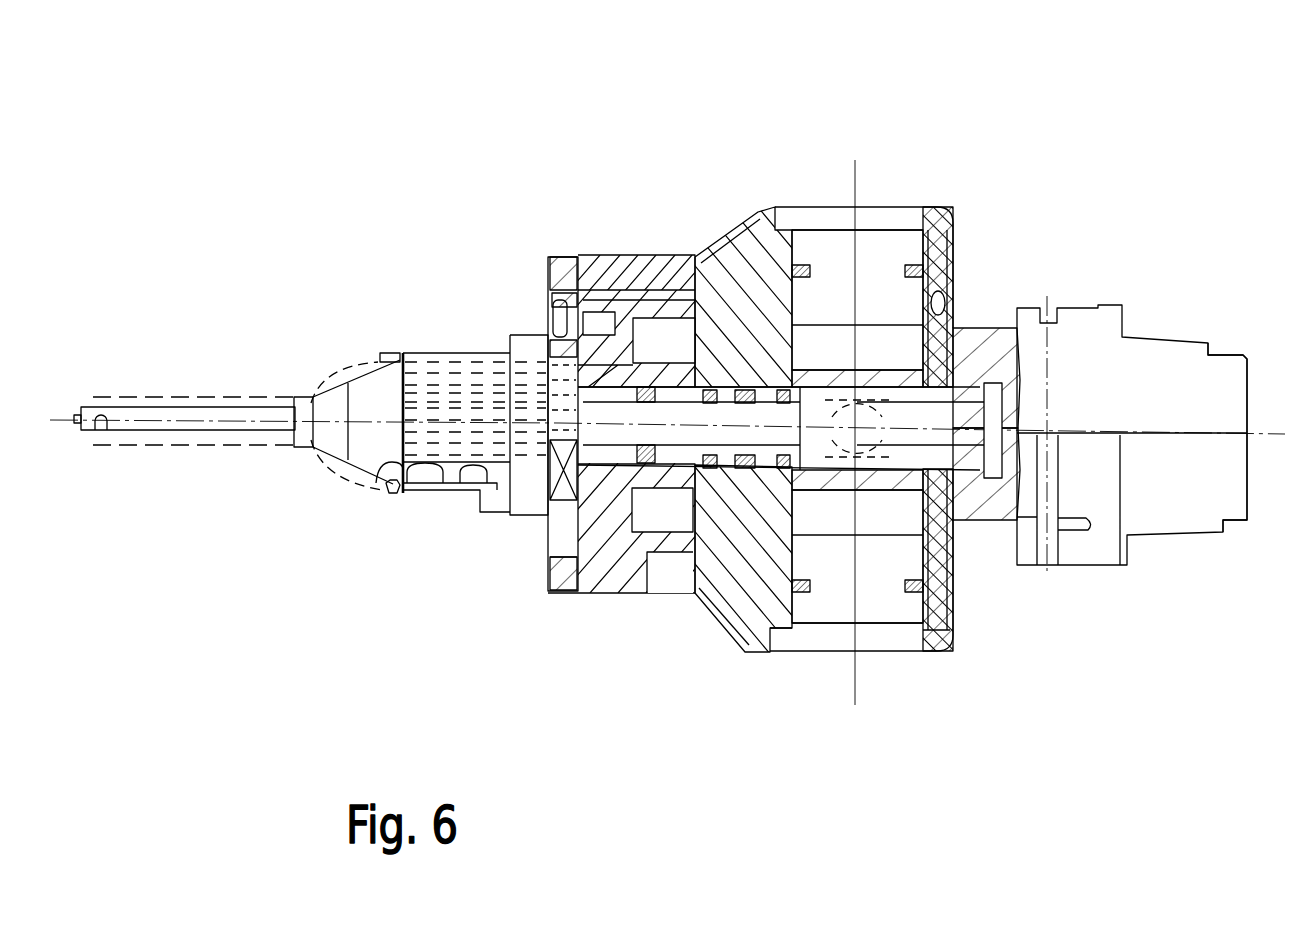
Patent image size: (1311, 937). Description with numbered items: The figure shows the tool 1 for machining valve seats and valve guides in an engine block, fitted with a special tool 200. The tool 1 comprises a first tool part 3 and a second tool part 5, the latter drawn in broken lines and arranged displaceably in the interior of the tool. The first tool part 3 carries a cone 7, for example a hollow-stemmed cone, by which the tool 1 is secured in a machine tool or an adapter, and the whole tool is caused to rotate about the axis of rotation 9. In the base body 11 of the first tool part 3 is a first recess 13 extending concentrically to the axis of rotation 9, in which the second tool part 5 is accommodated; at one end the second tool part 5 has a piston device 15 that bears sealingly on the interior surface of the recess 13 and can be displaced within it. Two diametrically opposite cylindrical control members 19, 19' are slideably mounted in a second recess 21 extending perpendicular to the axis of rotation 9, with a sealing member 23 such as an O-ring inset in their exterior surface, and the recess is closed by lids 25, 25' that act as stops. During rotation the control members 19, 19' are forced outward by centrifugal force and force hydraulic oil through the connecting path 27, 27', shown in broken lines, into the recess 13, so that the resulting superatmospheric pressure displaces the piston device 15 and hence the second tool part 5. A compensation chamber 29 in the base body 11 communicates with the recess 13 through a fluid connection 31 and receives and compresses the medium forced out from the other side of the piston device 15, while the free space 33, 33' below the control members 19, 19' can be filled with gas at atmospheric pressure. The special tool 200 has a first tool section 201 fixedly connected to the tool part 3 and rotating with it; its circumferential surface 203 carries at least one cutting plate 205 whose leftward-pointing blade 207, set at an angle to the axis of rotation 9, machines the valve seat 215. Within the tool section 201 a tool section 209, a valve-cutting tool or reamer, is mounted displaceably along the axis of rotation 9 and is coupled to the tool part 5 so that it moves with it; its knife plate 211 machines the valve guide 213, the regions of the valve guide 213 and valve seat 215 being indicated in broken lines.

The tool 1 is at (777, 187).
The first tool part 3 is at (742, 270).
The second tool part 5 is at (481, 423).
The cone 7 is at (1213, 395).
The axis of rotation 9 is at (1158, 415).
The base body 11 is at (728, 603).
The first recess 13 is at (958, 413).
The piston device 15 is at (548, 592).
The control member 19 is at (869, 216).
The control member 19' is at (892, 606).
The second recess 21 is at (743, 222).
The sealing member 23 is at (813, 267).
The lid 25 is at (857, 184).
The lid 25' is at (866, 669).
The connecting path 27 is at (980, 241).
The connecting path 27' is at (986, 586).
The compensation chamber 29 is at (640, 593).
The fluid connection 31 is at (697, 597).
The free space 33 is at (995, 311).
The free space 33' is at (1031, 522).
The special tool 200 is at (318, 340).
The first tool section 201 is at (456, 372).
The circumferential surface 203 is at (433, 370).
The cutting plate 205 is at (448, 490).
The blade 207 is at (383, 497).
The tool section 209 is at (142, 417).
The knife plate 211 is at (93, 432).
The valve guide 213 is at (192, 393).
The valve seat 215 is at (380, 340).